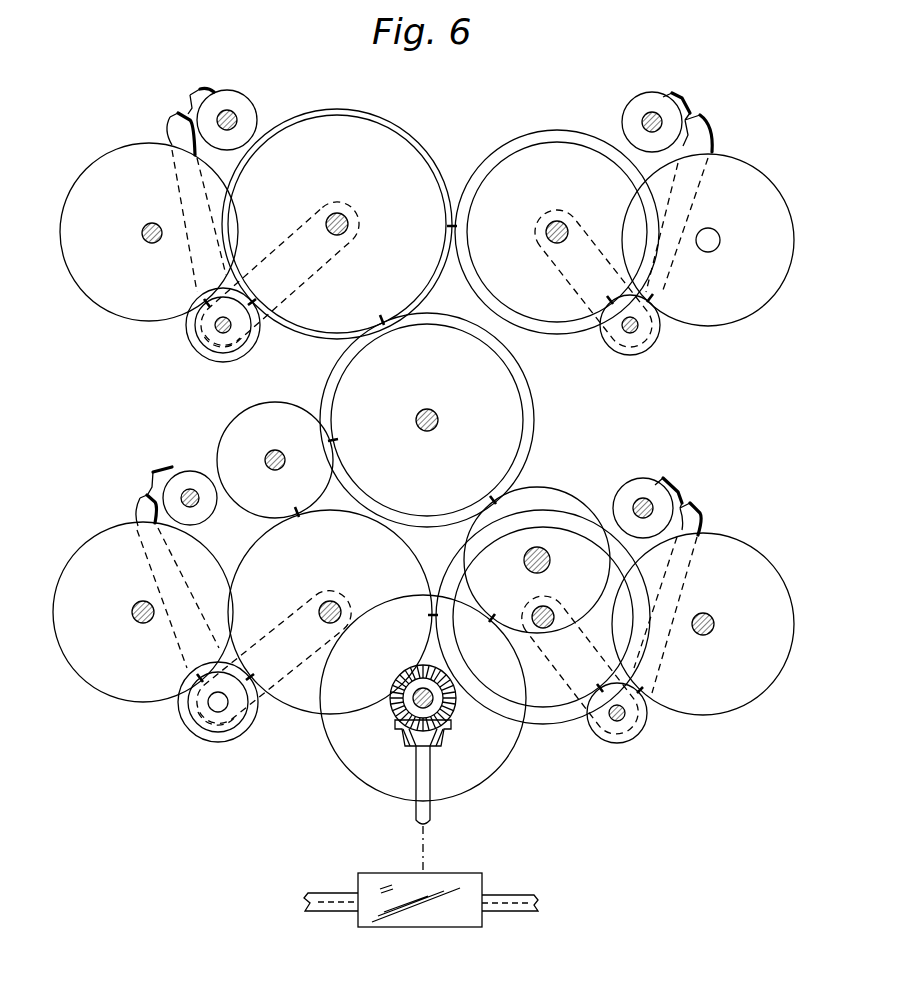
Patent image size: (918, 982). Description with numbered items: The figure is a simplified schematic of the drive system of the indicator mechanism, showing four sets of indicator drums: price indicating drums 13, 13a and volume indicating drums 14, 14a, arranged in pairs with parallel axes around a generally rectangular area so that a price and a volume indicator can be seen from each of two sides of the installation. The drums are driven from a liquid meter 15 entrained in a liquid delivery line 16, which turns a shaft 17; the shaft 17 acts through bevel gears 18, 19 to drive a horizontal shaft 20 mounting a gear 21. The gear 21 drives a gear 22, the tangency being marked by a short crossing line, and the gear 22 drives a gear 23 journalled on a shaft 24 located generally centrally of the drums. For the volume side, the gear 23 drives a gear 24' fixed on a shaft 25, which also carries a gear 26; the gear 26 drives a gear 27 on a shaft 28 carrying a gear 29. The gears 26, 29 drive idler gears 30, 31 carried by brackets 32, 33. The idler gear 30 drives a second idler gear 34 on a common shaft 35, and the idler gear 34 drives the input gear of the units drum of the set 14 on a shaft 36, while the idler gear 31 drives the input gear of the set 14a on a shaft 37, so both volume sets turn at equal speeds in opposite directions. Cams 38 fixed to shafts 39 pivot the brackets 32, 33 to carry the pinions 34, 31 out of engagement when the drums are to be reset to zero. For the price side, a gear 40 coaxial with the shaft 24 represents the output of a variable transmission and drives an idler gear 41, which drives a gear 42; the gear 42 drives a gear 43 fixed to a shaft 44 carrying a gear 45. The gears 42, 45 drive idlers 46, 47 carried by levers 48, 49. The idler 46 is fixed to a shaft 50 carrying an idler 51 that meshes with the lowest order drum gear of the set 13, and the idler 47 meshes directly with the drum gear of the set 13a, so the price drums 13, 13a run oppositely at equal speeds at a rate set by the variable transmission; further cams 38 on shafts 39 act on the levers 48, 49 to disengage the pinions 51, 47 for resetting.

The price indicating drums 13 is at (136, 612).
The price indicating drums 13a is at (713, 624).
The volume indicating drums 14 is at (144, 232).
The volume indicating drums 14a is at (720, 240).
The liquid meter 15 is at (434, 885).
The liquid delivery line 16 is at (421, 913).
The shaft 17 is at (439, 809).
The bevel gear 18 is at (438, 735).
The bevel gear 19 is at (398, 712).
The horizontal shaft 20 is at (435, 698).
The gear 21 is at (426, 699).
The gear 22 is at (537, 546).
The gear 23 is at (446, 420).
The shaft 24 is at (440, 430).
The gear 24' is at (280, 274).
The shaft 25 is at (356, 212).
The gear 26 is at (339, 224).
The gear 27 is at (557, 225).
The shaft 28 is at (576, 278).
The gear 29 is at (557, 212).
The idler gear 30 is at (234, 325).
The idler gear 31 is at (641, 331).
The bracket 32 is at (181, 190).
The bracket 33 is at (694, 193).
The second idler gear 34 is at (209, 360).
The common shaft 35 is at (226, 351).
The shaft 36 is at (135, 237).
The shaft 37 is at (719, 252).
The cam 38 is at (422, 299).
The shaft 39 is at (421, 311).
The gear 40 is at (443, 420).
The idler gear 41 is at (264, 460).
The gear 42 is at (314, 616).
The gear 43 is at (543, 633).
The shaft 44 is at (580, 651).
The gear 45 is at (543, 609).
The idler gear 46 is at (225, 707).
The idler gear 47 is at (617, 729).
The lever 48 is at (161, 567).
The lever 49 is at (688, 585).
The shaft 50 is at (214, 736).
The idler gear 51 is at (190, 717).